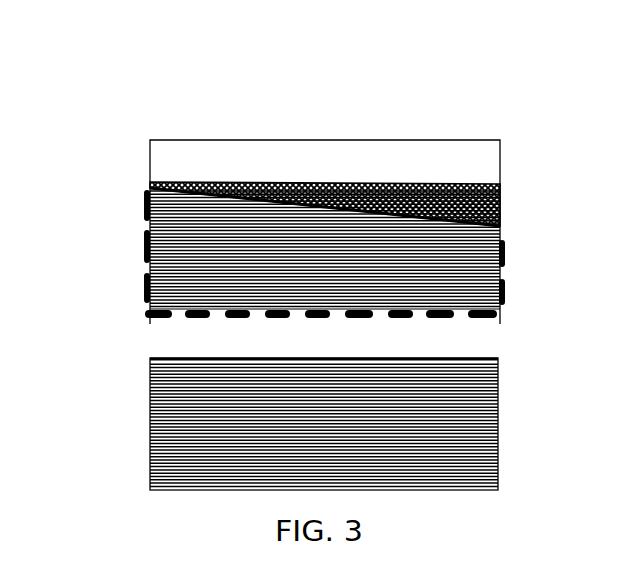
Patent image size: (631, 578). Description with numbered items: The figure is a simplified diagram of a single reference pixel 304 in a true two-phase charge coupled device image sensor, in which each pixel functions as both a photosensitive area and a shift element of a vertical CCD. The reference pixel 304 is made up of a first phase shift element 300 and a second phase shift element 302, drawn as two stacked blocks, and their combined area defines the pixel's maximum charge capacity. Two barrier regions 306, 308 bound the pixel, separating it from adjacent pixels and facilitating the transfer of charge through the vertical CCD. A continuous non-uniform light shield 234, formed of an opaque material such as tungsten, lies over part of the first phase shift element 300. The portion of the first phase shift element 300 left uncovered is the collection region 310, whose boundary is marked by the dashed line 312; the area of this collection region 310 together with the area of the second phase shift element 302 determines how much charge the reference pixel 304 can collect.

The first phase shift element 300 is at (116, 170).
The second phase shift element 302 is at (120, 347).
The reference pixel 304 is at (295, 100).
The barrier region 306 is at (460, 158).
The continuous non-uniform light shield 234 is at (492, 186).
The collection region 310 is at (456, 238).
The dashed line 312 is at (496, 284).
The barrier region 308 is at (458, 334).